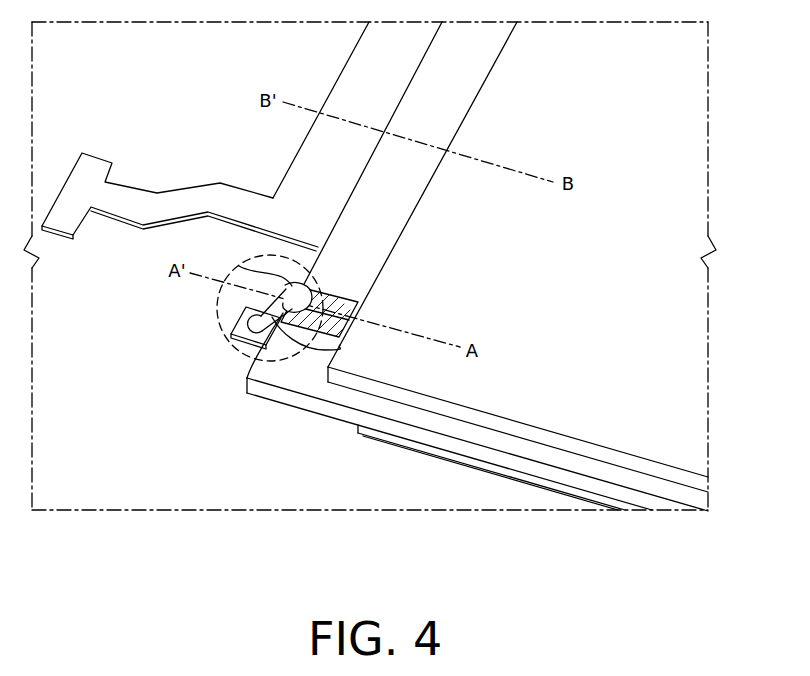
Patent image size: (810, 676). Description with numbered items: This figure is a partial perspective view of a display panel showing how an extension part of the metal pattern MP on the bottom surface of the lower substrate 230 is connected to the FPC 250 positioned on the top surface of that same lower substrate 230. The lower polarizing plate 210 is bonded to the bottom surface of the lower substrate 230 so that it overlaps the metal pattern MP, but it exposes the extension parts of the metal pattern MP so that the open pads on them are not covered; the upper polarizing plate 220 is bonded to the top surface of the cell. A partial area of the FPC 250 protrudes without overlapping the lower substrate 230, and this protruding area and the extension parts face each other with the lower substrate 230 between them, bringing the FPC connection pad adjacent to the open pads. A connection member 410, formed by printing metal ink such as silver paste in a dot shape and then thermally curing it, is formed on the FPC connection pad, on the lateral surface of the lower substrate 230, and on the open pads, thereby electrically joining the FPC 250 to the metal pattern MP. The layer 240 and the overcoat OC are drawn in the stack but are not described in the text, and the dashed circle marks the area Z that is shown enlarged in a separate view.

The lower polarizing plate 210 is at (693, 413).
The upper polarizing plate 220 is at (506, 484).
The lower substrate 230 is at (348, 413).
The intermediate layer 240 is at (383, 436).
The FPC 250 is at (234, 332).
The connection member 410 is at (239, 266).
The metal pattern MP is at (247, 380).
The overcoat OC is at (303, 342).
The area Z is at (232, 353).